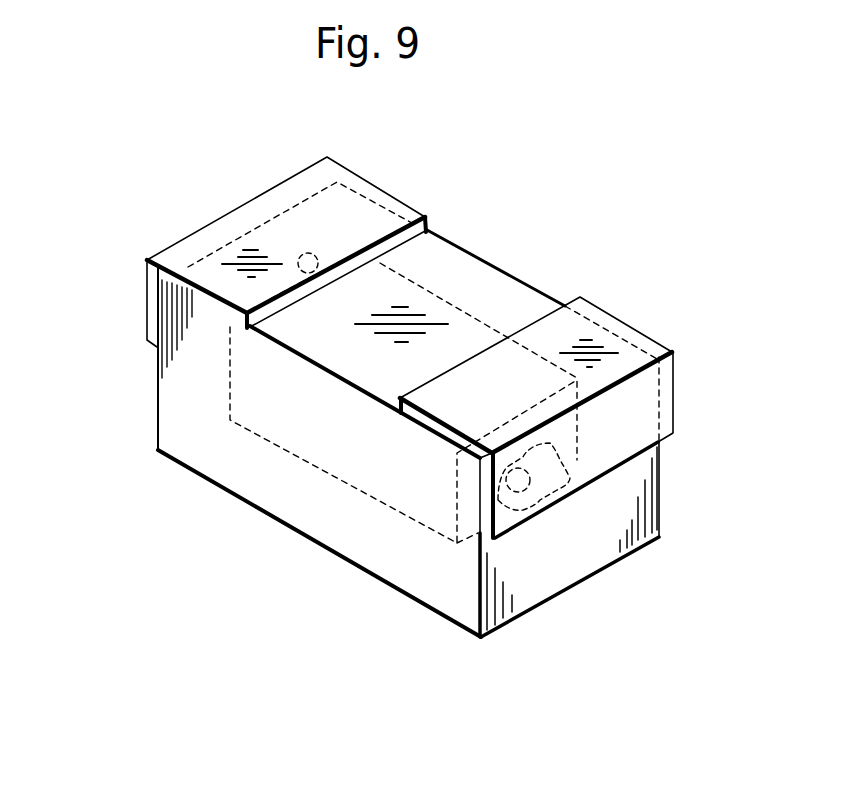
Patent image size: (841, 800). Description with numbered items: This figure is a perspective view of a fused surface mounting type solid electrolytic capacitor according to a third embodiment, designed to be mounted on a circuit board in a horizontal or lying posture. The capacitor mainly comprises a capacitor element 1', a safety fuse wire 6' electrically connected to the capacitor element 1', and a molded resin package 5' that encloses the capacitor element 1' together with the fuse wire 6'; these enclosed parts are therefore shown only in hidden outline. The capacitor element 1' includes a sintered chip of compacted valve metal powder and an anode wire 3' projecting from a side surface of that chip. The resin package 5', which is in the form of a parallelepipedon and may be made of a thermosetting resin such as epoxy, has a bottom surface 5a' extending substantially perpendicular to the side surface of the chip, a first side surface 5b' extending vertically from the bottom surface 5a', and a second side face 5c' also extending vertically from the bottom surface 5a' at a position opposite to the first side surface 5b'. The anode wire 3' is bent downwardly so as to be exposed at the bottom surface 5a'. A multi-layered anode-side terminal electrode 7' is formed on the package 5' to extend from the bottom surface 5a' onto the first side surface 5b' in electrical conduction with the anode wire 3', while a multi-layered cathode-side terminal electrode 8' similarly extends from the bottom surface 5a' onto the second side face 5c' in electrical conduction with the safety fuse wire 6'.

The capacitor element 1' is at (391, 448).
The anode wire 3' is at (292, 197).
The molded resin package 5' is at (408, 491).
The bottom surface 5a' is at (454, 288).
The first side surface 5b' is at (121, 355).
The second side face 5c' is at (573, 546).
The safety fuse wire 6' is at (622, 474).
The anode-side terminal electrode 7' is at (286, 234).
The cathode-side terminal electrode 8' is at (573, 417).